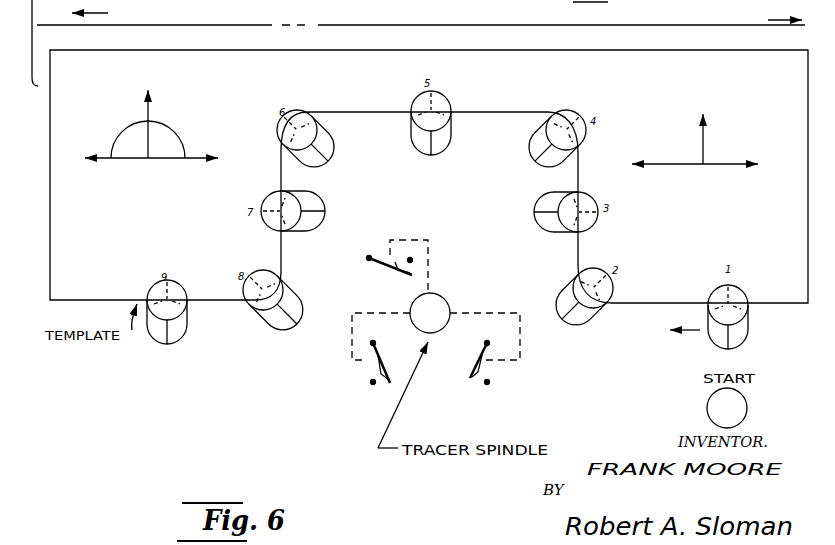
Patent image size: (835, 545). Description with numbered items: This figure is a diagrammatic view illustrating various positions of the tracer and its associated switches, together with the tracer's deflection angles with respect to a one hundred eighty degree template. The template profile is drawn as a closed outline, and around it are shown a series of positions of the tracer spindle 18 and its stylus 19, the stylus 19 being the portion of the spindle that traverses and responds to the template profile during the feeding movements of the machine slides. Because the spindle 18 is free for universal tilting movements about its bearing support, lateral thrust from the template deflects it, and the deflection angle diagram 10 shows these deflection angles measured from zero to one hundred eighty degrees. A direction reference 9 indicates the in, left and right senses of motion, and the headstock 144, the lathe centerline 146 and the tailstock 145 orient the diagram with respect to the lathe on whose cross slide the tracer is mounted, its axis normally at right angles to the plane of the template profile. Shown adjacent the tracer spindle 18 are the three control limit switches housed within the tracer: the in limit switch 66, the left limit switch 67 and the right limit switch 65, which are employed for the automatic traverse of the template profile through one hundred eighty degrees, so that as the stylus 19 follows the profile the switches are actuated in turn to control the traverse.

The headstock 144 is at (210, 16).
The lathe centerline 146 is at (421, 13).
The tailstock 145 is at (672, 20).
The deflection angle diagram 10 is at (197, 122).
The direction reference diagram (in/left/right) 9 is at (731, 131).
The spindle 18 is at (432, 93).
The stylus 19 is at (440, 155).
The in limit switch 66 is at (375, 250).
The left limit switch 67 is at (377, 397).
The right limit switch 65 is at (500, 372).